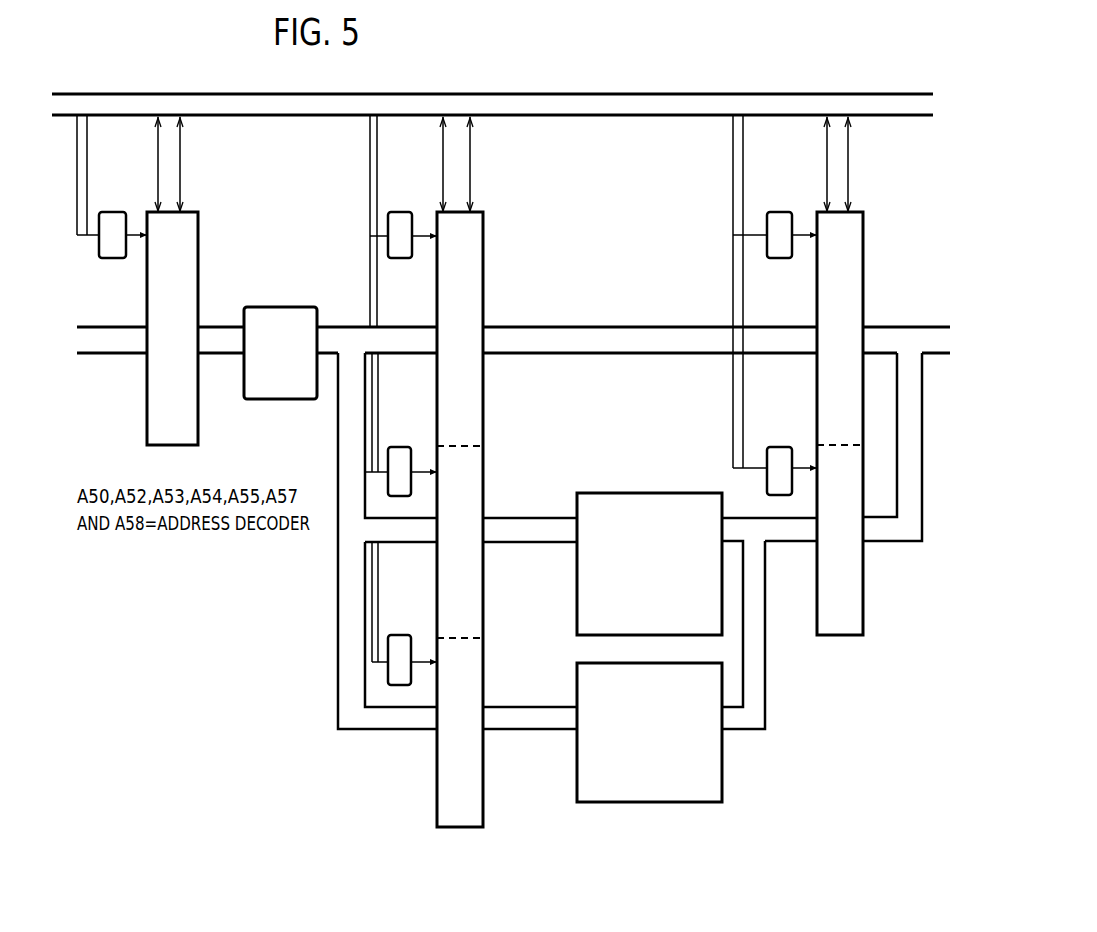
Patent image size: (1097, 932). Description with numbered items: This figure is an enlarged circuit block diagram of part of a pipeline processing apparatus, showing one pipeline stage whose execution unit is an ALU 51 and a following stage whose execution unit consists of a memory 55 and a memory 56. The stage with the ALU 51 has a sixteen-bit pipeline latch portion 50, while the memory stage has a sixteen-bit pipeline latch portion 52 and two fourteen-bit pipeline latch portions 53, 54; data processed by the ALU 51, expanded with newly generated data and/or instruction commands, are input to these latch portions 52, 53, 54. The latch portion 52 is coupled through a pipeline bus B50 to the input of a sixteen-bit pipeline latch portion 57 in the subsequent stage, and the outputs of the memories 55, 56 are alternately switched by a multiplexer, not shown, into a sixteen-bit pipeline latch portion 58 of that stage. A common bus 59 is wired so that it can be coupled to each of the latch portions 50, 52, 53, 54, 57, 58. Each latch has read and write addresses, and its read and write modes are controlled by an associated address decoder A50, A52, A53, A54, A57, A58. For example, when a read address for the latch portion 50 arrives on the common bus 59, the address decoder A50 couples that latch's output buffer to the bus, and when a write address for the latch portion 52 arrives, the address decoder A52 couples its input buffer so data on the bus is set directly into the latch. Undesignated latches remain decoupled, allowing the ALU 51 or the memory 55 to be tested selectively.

The pipeline latch portion 50 is at (200, 289).
The ALU 51 is at (281, 400).
The pipeline latch portion 52 is at (484, 306).
The pipeline latch portion 53 is at (484, 480).
The pipeline latch portion 54 is at (484, 693).
The memory 55 is at (619, 492).
The memory 56 is at (575, 763).
The pipeline latch portion 57 is at (864, 304).
The pipeline latch portion 58 is at (864, 607).
The common bus 59 is at (554, 92).
The address decoder A50 is at (116, 211).
The address decoder A52 is at (403, 258).
The address decoder A53 is at (398, 446).
The address decoder A54 is at (397, 634).
The address decoder A57 is at (768, 258).
The address decoder A58 is at (768, 446).
The pipeline bus B50 is at (620, 354).